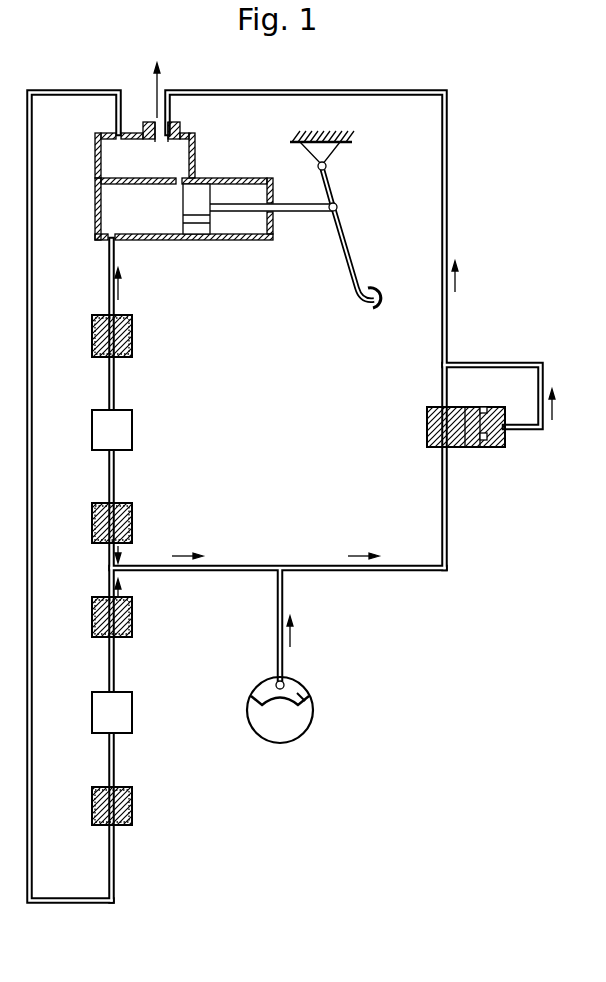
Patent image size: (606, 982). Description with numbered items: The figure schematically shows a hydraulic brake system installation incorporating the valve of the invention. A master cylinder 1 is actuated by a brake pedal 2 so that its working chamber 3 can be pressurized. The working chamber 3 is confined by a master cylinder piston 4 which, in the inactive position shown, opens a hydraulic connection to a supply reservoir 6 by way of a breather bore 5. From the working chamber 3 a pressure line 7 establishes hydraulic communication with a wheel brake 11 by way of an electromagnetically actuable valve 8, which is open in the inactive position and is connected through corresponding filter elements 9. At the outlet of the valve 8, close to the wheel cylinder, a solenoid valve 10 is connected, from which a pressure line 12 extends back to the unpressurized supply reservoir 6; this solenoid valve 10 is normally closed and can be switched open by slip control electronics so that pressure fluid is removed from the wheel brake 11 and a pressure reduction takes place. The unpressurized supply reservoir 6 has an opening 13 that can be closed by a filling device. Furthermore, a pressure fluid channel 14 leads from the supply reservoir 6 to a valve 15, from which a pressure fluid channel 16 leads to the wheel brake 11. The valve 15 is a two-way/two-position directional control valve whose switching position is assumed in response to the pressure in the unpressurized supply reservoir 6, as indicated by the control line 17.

The master cylinder 1 is at (195, 181).
The brake pedal 2 is at (358, 284).
The working chamber 3 is at (115, 212).
The master cylinder piston 4 is at (208, 237).
The breather bore 5 is at (174, 180).
The supply reservoir 6 is at (100, 160).
The pressure line 7 is at (108, 278).
The electromagnetically actuable valve 8 is at (125, 430).
The filter elements 9 is at (133, 337).
The solenoid valve 10 is at (130, 712).
The wheel brake 11 is at (303, 700).
The pressure line 12 is at (68, 903).
The opening 13 is at (155, 122).
The pressure fluid channel 14 is at (448, 200).
The valve 15 is at (427, 430).
The pressure fluid channel 16 is at (375, 572).
The control line 17 is at (486, 365).